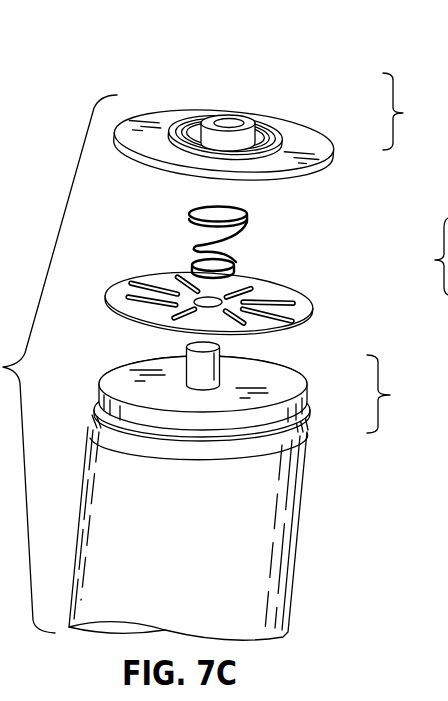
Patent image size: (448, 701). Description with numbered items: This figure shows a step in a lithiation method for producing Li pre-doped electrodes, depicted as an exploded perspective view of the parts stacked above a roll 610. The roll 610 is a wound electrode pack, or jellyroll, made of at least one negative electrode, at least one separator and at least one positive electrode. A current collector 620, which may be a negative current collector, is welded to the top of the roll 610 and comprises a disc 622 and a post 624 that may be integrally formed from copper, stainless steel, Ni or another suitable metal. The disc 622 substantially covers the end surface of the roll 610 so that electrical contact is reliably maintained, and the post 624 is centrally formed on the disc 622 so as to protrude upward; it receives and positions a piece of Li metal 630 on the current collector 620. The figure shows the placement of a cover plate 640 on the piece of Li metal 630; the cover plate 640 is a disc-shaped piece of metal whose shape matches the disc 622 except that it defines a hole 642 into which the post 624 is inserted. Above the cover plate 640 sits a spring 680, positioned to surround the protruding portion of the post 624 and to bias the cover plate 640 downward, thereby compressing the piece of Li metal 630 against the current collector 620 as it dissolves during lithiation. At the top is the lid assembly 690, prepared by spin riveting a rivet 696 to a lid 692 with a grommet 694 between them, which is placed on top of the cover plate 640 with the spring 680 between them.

The roll 610 is at (288, 480).
The current collector 620 is at (407, 325).
The disc 622 is at (303, 418).
The post 624 is at (215, 371).
The piece of Li metal 630 is at (120, 364).
The cover plate 640 is at (230, 290).
The hole 642 is at (198, 300).
The spring 680 is at (245, 227).
The lid assembly 690 is at (412, 111).
The lid 692 is at (310, 142).
The grommet 694 is at (273, 142).
The rivet 696 is at (263, 130).